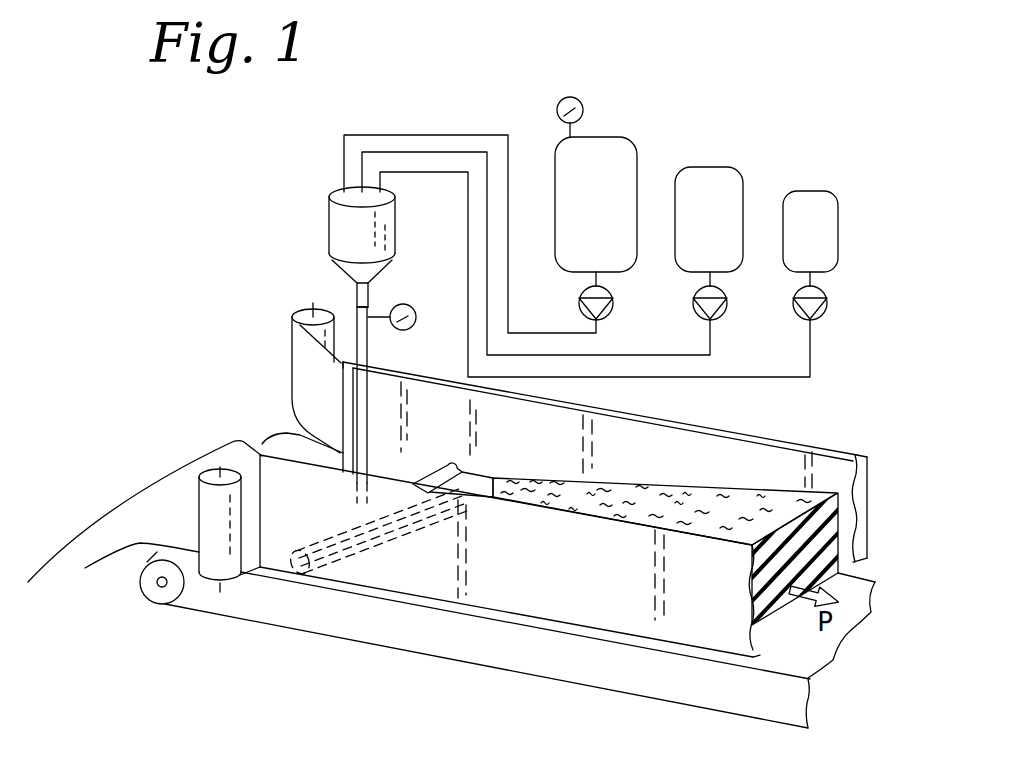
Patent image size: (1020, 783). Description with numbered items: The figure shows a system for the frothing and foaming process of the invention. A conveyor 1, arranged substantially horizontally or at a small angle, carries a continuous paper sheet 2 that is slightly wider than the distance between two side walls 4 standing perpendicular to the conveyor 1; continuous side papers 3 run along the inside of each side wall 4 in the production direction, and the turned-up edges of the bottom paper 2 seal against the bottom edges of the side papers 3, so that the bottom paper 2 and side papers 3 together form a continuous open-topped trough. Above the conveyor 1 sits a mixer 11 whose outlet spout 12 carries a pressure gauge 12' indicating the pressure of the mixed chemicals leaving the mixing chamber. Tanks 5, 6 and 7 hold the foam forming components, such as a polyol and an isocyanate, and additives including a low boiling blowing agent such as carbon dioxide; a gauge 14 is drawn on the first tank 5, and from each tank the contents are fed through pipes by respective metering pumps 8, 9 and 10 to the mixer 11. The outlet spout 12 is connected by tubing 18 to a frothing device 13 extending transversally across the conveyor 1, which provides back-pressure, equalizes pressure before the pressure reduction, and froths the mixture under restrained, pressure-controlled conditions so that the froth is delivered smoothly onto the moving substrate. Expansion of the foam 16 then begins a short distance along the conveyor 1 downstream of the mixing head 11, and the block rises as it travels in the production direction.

The conveyor 1 is at (242, 624).
The continuous paper sheet 2 is at (134, 497).
The side papers 3 is at (305, 368).
The side walls 4 is at (738, 435).
The tank 5 is at (622, 142).
The tank 6 is at (726, 174).
The tank 7 is at (820, 195).
The metering pump 8 is at (613, 304).
The metering pump 9 is at (727, 304).
The metering pump 10 is at (827, 304).
The mixer 11 is at (340, 233).
The outlet spout 12 is at (320, 285).
The pressure gauge 12' is at (409, 292).
The frothing device 13 is at (340, 575).
The pressure gauge 14 is at (557, 106).
The foam 16 is at (752, 493).
The tubing 18 is at (369, 352).